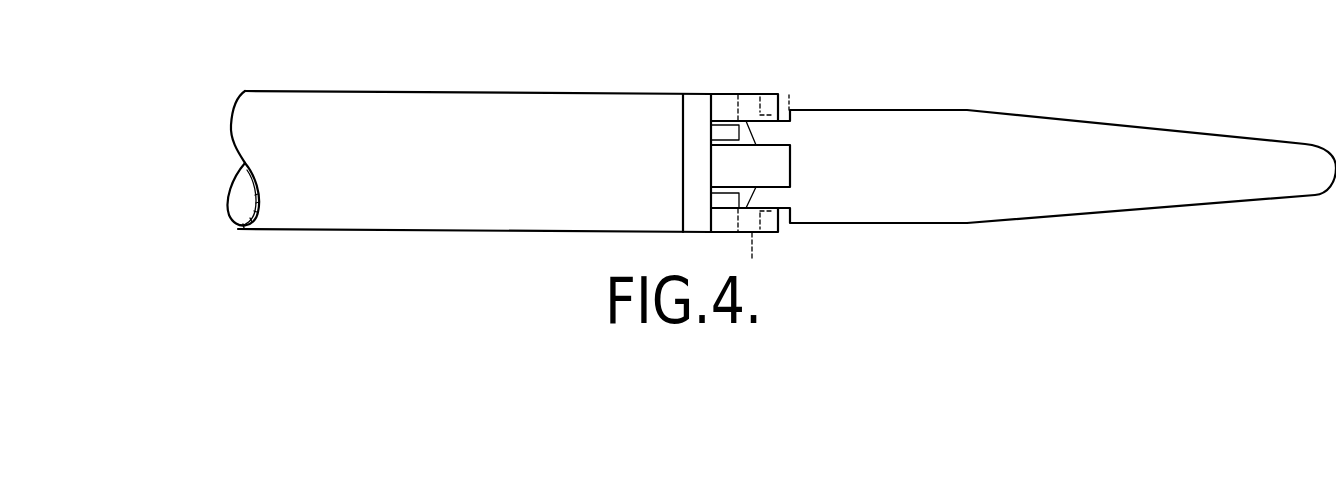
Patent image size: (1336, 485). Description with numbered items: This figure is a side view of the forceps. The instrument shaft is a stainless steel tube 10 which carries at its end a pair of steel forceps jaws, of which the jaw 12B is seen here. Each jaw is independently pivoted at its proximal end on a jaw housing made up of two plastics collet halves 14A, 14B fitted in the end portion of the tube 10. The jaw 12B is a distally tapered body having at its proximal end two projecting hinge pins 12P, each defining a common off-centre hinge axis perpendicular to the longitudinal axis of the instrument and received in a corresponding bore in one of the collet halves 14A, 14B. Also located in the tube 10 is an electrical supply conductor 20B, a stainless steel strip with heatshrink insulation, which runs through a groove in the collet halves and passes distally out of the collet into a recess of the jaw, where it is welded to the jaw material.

The stainless steel tube 10 is at (442, 107).
The collet half 14A is at (733, 100).
The collet half 14B is at (779, 233).
The electrical supply conductor 20B is at (790, 167).
The forceps jaw 12B is at (1117, 142).
The hinge pin 12P is at (790, 93).